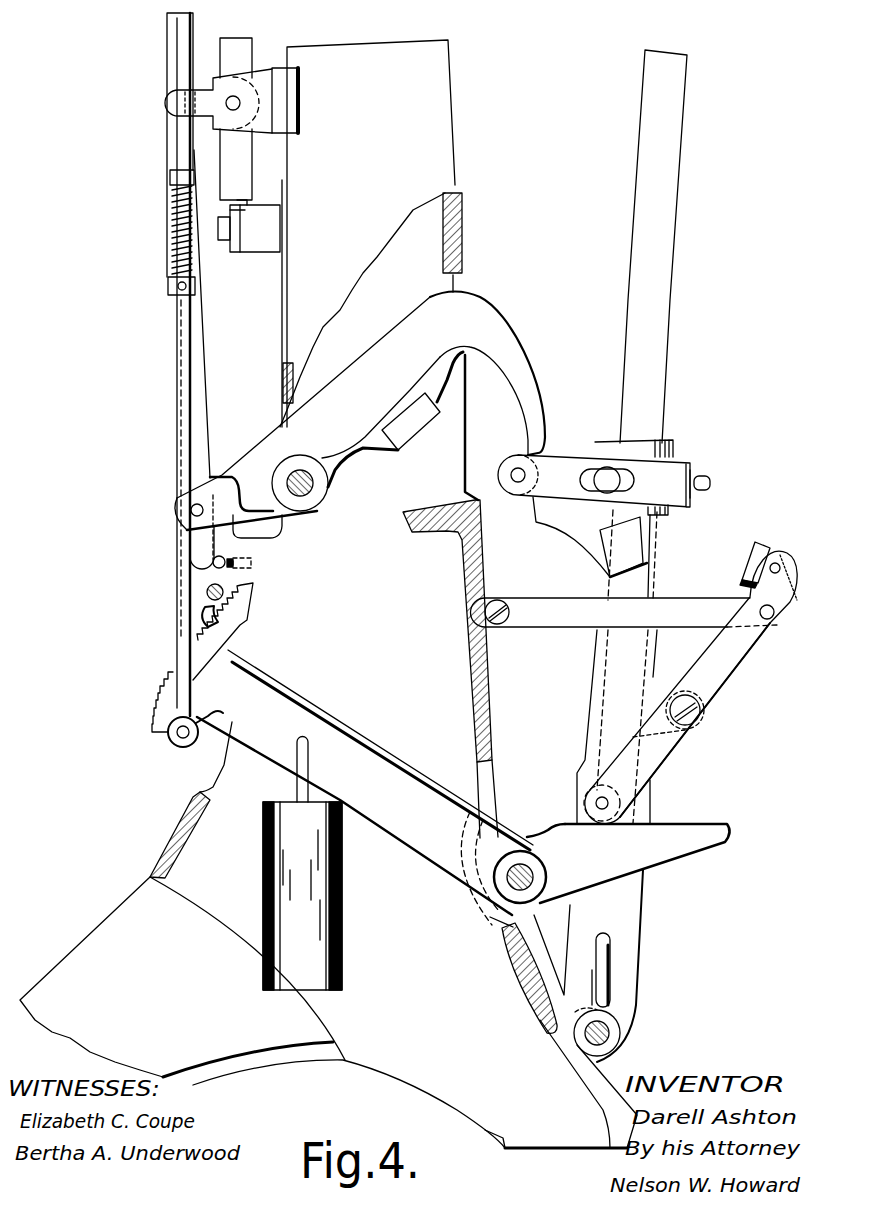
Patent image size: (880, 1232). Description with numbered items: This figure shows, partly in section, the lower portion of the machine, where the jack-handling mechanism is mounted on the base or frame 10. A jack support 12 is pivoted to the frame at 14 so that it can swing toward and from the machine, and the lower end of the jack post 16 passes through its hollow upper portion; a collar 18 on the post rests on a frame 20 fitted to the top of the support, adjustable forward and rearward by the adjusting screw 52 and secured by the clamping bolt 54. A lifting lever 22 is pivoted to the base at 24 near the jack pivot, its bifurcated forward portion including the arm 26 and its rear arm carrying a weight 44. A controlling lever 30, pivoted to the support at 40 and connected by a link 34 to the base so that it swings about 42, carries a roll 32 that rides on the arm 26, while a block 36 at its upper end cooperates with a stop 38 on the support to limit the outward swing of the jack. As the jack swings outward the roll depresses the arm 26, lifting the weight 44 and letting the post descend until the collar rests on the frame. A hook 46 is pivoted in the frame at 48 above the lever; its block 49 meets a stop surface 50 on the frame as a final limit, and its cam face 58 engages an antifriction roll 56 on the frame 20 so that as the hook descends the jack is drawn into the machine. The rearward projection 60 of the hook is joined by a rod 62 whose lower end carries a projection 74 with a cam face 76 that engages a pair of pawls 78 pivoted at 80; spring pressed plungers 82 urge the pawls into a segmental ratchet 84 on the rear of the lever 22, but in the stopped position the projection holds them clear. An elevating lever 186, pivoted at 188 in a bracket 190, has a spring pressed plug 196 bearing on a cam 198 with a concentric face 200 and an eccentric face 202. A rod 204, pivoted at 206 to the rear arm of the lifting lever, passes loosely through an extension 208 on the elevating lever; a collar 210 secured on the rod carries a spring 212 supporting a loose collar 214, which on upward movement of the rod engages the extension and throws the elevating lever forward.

The base or frame 10 is at (371, 233).
The jack support 12 is at (680, 687).
The pivot 14 is at (609, 1032).
The jack post 16 is at (610, 556).
The collar 18 is at (627, 455).
The frame 20 is at (558, 477).
The lifting lever 22 is at (328, 899).
The pivot point 24 is at (513, 883).
The arm 26 is at (635, 863).
The controlling lever 30 is at (727, 667).
The roll 32 is at (590, 793).
The link 34 is at (624, 613).
The block 36 is at (752, 562).
The stop 38 is at (643, 540).
The pivotal point 40 is at (693, 722).
The pivot point 42 is at (769, 619).
The weight 44 is at (302, 864).
The hook 46 is at (392, 419).
The pivot 48 is at (307, 497).
The block 49 is at (403, 430).
The stop surface 50 is at (450, 596).
The adjusting screw 52 is at (708, 477).
The clamping bolt 54 is at (607, 483).
The antifriction roll 56 is at (520, 487).
The cam face 58 is at (512, 380).
The rearward projection 60 is at (257, 470).
The rod 62 is at (195, 380).
The projection 74 is at (203, 538).
The cam face 76 is at (225, 530).
The pawls 78 is at (198, 613).
The pivot 80 is at (207, 592).
The spring pressed plungers 82 is at (253, 567).
The segmental ratchet 84 is at (170, 703).
The elevating lever 186 is at (237, 63).
The pivot 188 is at (238, 107).
The bracket 190 is at (272, 90).
The spring pressed plug 196 is at (232, 210).
The cam 198 is at (262, 247).
The concentric face 200 is at (247, 195).
The eccentric face 202 is at (240, 222).
The rod 204 is at (183, 308).
The pivot 206 is at (181, 738).
The extension 208 is at (163, 103).
The collar 210 is at (170, 284).
The spring 212 is at (175, 239).
The loose collar 214 is at (180, 181).